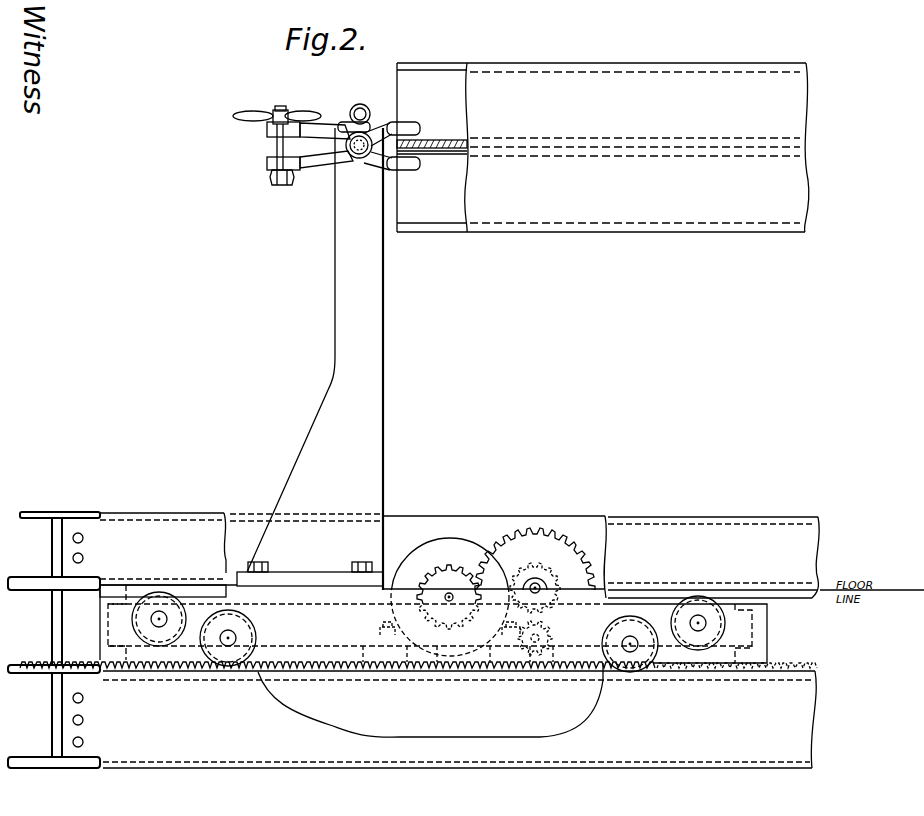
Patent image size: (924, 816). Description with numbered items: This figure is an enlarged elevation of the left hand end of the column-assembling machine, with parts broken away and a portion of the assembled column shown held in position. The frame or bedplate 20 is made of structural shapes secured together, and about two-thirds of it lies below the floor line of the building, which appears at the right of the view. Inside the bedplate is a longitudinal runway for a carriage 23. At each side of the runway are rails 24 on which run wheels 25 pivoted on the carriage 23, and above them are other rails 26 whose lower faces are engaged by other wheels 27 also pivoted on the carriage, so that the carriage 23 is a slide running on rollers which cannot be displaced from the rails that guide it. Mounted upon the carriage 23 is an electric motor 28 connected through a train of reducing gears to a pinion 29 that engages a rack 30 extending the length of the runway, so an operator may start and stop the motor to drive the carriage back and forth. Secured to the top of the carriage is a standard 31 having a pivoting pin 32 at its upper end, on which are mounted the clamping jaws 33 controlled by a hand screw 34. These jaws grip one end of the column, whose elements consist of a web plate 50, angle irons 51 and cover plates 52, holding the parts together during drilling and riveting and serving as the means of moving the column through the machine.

The frame or bedplate 20 is at (720, 530).
The carriage 23 is at (768, 639).
The rails 24 is at (132, 673).
The wheels 25 is at (220, 650).
The rails 26 is at (208, 585).
The wheels 27 is at (145, 606).
The electric motor 28 is at (458, 540).
The pinion 29 is at (545, 663).
The rack 30 is at (437, 669).
The standard 31 is at (385, 389).
The pivoting pin 32 is at (361, 158).
The clamping jaws 33 is at (407, 125).
The hand screw 34 is at (276, 140).
The web plate 50 is at (463, 141).
The angle irons 51 is at (432, 147).
The cover plates 52 is at (638, 147).